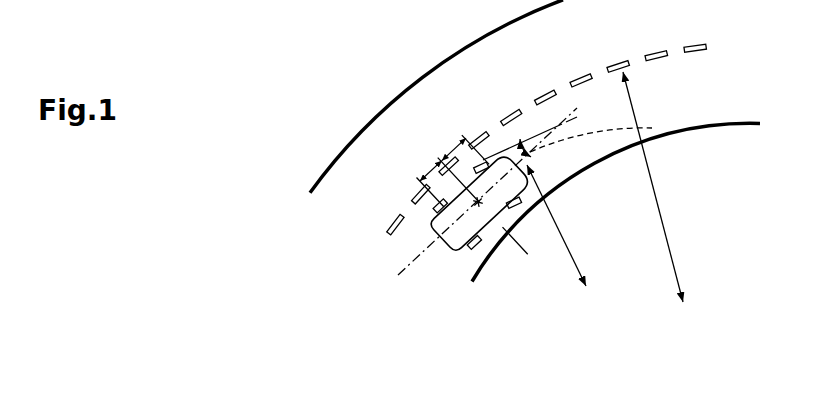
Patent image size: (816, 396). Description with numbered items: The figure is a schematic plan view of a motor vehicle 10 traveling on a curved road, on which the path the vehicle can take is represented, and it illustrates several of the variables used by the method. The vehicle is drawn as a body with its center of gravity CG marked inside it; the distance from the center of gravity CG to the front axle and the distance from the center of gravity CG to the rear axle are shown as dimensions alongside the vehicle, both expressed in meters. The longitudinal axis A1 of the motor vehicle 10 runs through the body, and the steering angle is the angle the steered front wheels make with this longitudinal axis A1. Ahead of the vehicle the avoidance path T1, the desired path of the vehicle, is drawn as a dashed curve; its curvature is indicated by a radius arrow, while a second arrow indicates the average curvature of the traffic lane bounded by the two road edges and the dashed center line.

The motor vehicle 10 is at (429, 226).
The longitudinal axis A1 is at (426, 252).
The center of gravity CG is at (481, 212).
The avoidance path T1 is at (597, 135).